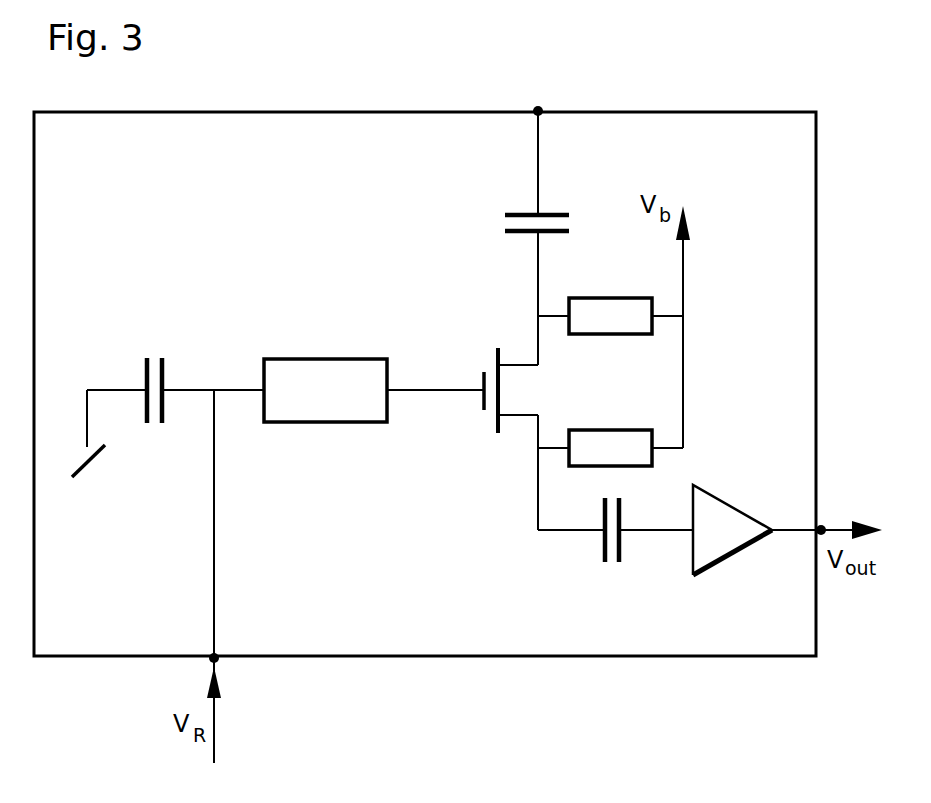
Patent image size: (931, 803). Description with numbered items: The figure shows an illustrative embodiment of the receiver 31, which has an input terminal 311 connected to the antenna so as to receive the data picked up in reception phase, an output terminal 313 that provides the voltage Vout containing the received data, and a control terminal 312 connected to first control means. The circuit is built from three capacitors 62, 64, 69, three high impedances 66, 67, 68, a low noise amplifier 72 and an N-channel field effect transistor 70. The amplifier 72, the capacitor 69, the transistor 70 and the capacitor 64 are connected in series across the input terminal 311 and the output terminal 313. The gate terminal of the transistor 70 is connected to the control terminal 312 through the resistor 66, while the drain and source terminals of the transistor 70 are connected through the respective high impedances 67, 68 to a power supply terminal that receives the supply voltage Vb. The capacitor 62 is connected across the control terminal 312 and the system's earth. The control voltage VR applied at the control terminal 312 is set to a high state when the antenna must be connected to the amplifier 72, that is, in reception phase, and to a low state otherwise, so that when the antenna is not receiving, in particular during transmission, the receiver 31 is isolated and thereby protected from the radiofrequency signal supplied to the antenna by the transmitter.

The receiver 31 is at (553, 690).
The input terminal 311 is at (538, 104).
The control terminal 312 is at (210, 661).
The output terminal 313 is at (825, 527).
The capacitor 62 is at (117, 412).
The capacitor 64 is at (615, 529).
The high impedance 66 is at (274, 406).
The high impedance 67 is at (610, 299).
The high impedance 68 is at (610, 431).
The capacitor 69 is at (534, 273).
The field effect transistor 70 is at (462, 433).
The low noise amplifier 72 is at (727, 520).